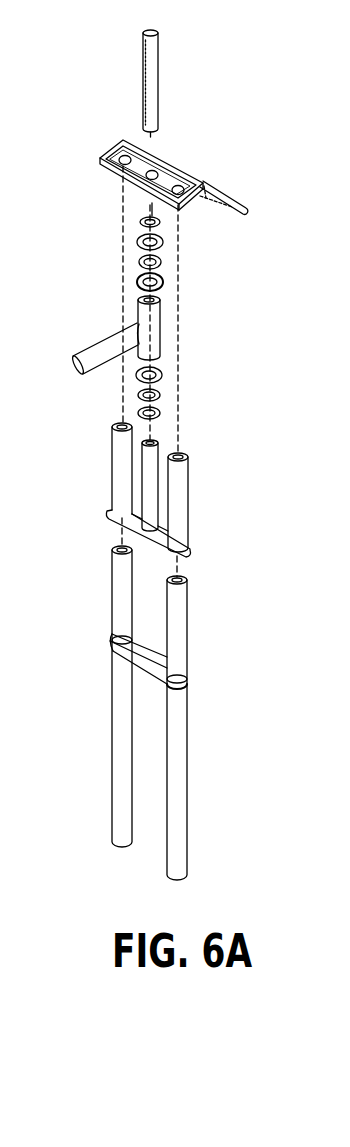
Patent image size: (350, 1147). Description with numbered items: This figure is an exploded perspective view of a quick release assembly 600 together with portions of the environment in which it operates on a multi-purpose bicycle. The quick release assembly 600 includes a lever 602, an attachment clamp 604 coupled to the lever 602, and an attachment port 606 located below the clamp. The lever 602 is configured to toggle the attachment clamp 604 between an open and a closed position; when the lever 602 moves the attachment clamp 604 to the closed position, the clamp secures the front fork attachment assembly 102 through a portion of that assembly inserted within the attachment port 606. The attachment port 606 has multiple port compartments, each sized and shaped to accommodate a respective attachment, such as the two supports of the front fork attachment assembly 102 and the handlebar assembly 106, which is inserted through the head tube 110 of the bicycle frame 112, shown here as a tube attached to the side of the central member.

The front fork attachment assembly 102 is at (193, 667).
The handlebar assembly 106 is at (160, 78).
The head tube 110 is at (160, 333).
The bicycle frame 112 is at (92, 338).
The quick release assembly 600 is at (184, 179).
The lever 602 is at (256, 218).
The attachment clamp 604 is at (110, 173).
The attachment port 606 is at (193, 507).